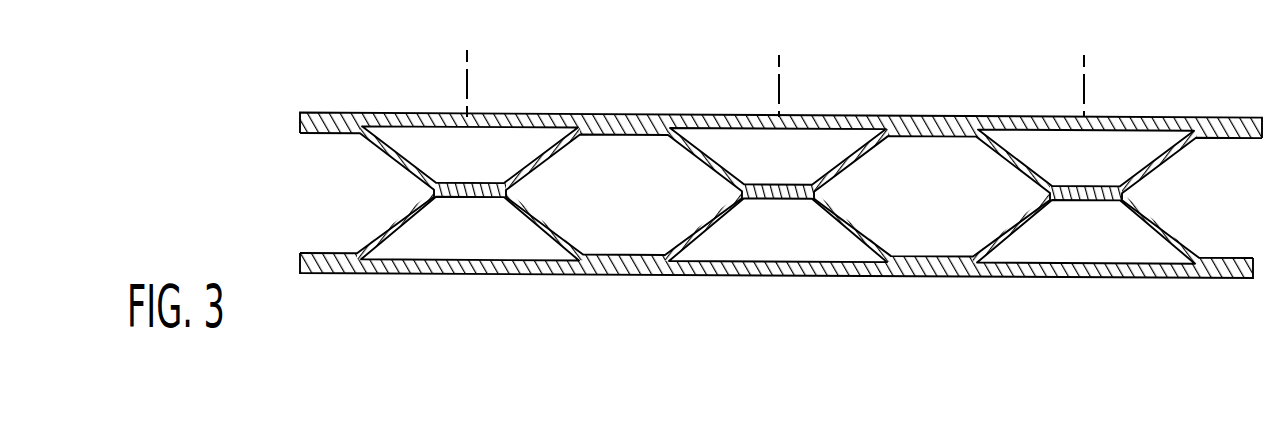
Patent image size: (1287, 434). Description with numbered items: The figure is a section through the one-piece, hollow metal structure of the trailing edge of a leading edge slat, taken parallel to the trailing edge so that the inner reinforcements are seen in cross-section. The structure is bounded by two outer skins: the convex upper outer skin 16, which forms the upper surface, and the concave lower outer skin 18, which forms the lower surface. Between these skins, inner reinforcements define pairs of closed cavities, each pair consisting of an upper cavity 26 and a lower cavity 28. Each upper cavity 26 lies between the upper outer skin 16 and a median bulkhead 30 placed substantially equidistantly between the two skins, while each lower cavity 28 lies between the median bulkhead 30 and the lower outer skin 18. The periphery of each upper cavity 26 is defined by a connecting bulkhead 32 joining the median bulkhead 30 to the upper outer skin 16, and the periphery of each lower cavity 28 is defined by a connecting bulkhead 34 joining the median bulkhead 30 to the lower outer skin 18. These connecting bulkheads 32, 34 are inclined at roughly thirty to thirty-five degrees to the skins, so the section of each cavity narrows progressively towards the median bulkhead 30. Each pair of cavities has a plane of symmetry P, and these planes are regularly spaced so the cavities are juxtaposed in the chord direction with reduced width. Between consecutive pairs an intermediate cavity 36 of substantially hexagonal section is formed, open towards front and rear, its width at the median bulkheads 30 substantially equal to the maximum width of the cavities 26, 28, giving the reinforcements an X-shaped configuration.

The upper outer skin 16 is at (710, 117).
The lower outer skin 18 is at (800, 270).
The upper cavity 26 is at (488, 158).
The lower cavity 28 is at (437, 238).
The median bulkhead 30 is at (463, 183).
The connecting bulkhead 32 is at (662, 147).
The connecting bulkhead 34 is at (385, 223).
The intermediate cavity 36 is at (342, 160).
The plane of symmetry P is at (467, 72).